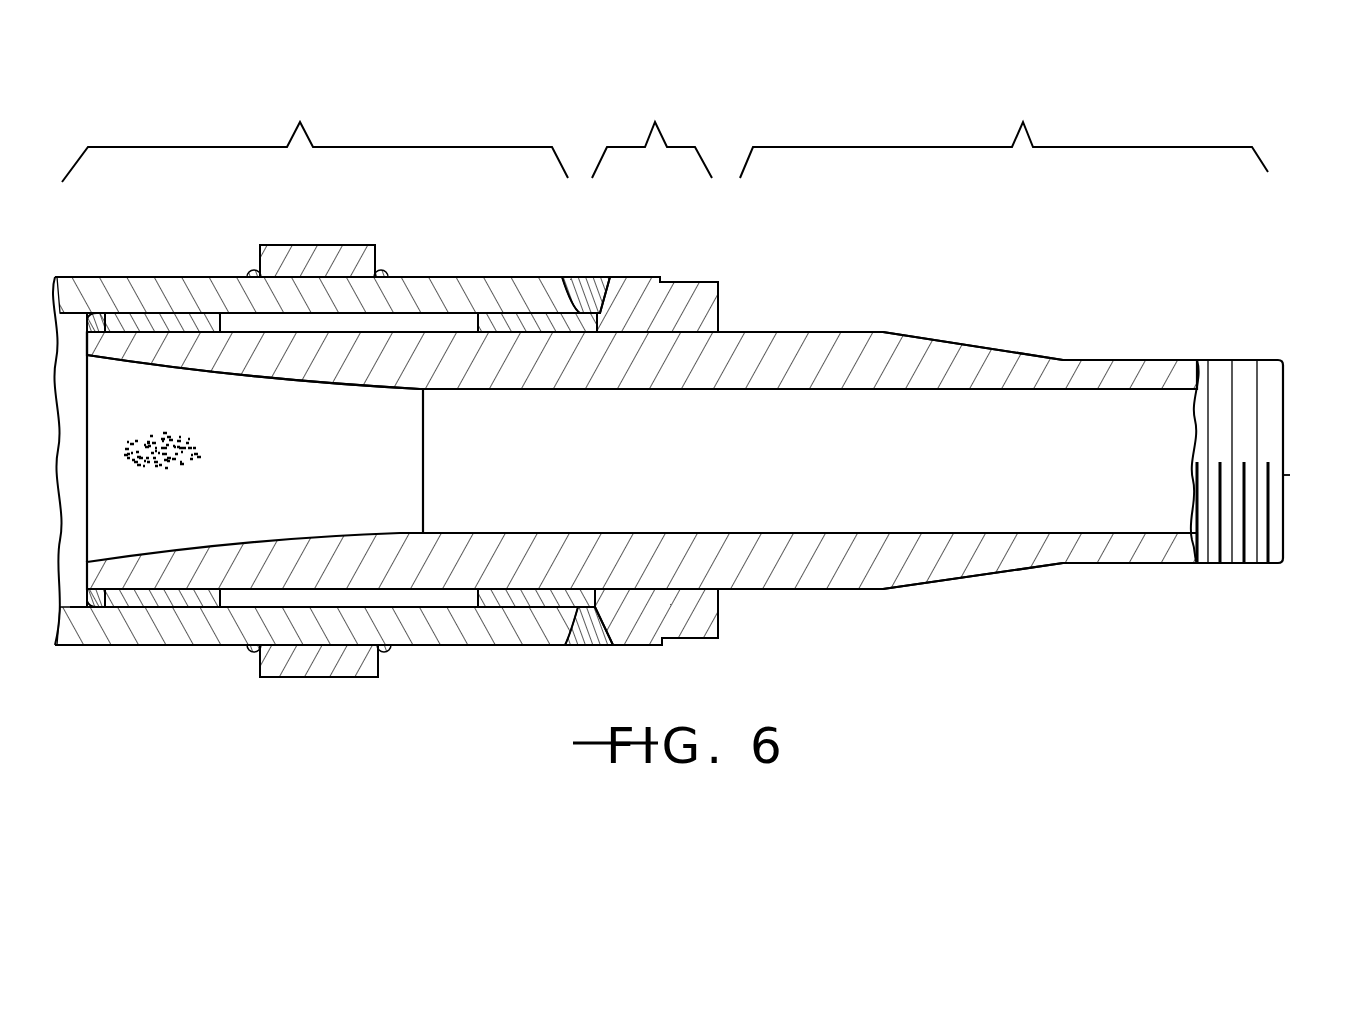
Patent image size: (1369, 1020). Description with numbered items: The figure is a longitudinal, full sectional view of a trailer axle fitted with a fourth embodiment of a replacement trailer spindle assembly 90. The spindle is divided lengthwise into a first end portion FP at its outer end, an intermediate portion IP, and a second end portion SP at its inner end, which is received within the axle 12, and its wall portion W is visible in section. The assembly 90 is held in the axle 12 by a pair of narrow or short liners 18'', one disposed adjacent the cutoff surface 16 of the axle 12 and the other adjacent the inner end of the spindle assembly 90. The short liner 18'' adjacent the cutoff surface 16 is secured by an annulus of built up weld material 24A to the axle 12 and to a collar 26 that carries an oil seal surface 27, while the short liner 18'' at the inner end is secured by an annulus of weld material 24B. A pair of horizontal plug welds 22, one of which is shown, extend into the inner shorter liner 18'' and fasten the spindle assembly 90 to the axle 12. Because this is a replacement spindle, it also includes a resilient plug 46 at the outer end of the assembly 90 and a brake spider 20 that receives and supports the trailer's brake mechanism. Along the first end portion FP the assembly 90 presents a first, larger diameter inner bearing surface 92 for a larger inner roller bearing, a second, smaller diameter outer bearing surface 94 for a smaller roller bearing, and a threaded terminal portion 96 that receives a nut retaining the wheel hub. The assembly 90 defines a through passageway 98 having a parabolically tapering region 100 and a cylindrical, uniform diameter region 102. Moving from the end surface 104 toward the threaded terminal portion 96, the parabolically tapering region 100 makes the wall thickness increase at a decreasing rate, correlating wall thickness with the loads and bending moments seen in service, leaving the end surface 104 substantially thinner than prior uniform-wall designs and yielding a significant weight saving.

The second end portion SP is at (315, 135).
The intermediate portion IP is at (652, 133).
The first end portion FP is at (1004, 134).
The axle 12 is at (393, 292).
The cutoff surface 16 is at (582, 633).
The short liners 18'' is at (342, 399).
The brake spider 20 is at (313, 245).
The horizontal plug welds 22 is at (157, 465).
The annulus of built up weld material 24A is at (597, 277).
The annulus of weld material 24B is at (92, 603).
The collar 26 is at (685, 625).
The oil seal surface 27 is at (680, 277).
The resilient plug 46 is at (1290, 475).
The replacement trailer spindle assembly 90 is at (721, 404).
The inner bearing surface 92 is at (805, 332).
The outer bearing surface 94 is at (1127, 360).
The threaded terminal portion 96 is at (1237, 360).
The through passageway 98 is at (395, 460).
The parabolically tapering region 100 is at (293, 385).
The cylindrical region 102 is at (993, 389).
The end surface 104 is at (88, 347).
The wall portion W is at (455, 577).